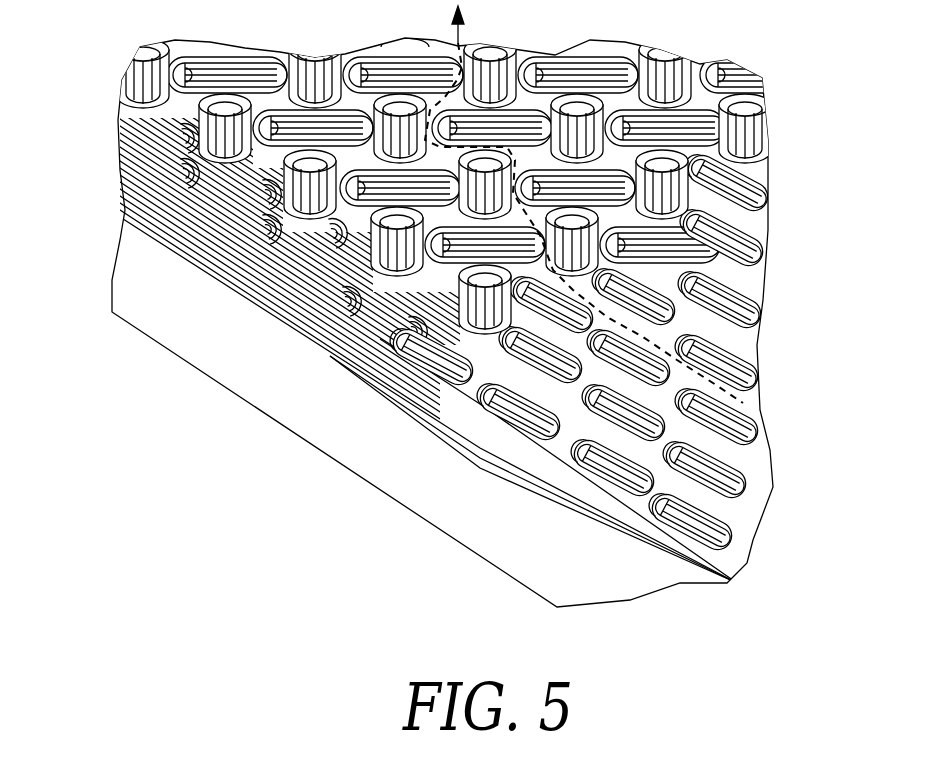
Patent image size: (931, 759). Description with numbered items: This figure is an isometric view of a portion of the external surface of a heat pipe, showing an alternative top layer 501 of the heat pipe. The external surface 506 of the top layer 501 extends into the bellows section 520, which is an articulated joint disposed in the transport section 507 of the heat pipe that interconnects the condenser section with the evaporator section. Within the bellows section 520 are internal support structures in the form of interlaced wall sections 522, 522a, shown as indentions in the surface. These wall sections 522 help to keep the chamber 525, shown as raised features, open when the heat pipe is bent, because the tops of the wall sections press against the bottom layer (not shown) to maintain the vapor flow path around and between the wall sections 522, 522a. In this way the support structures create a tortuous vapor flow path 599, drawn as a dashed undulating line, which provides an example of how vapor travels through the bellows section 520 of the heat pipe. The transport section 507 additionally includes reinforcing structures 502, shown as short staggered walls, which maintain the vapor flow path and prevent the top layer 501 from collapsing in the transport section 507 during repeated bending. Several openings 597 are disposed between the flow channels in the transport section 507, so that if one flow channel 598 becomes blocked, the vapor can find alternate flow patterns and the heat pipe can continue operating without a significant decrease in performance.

The top layer 501 is at (292, 438).
The reinforcing structures 502 is at (683, 497).
The external surface 506 is at (490, 360).
The transport section 507 is at (470, 467).
The bellows section 520 is at (177, 273).
The wall sections 522 is at (365, 362).
The wall sections 522a is at (280, 325).
The chamber 525 is at (158, 110).
The openings 597 is at (553, 447).
The flow channel 598 is at (613, 383).
The tortuous vapor flow path 599 is at (735, 340).